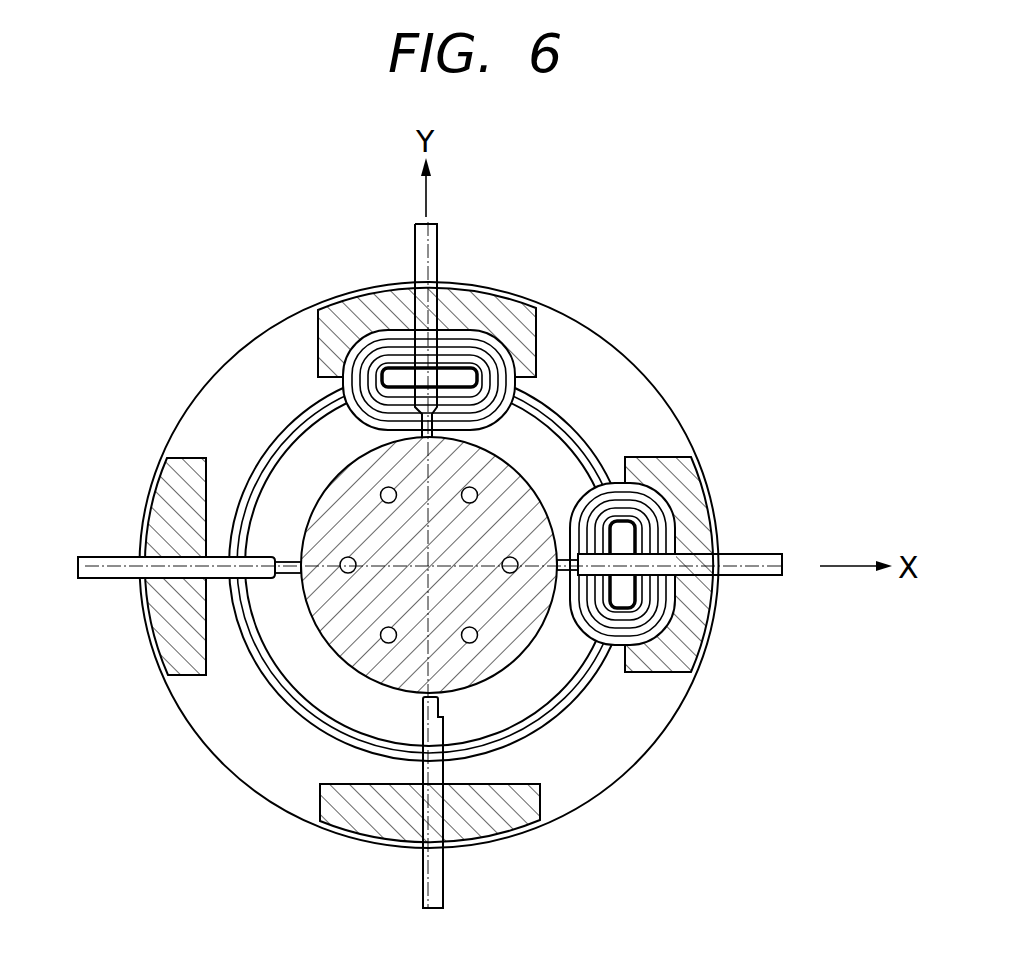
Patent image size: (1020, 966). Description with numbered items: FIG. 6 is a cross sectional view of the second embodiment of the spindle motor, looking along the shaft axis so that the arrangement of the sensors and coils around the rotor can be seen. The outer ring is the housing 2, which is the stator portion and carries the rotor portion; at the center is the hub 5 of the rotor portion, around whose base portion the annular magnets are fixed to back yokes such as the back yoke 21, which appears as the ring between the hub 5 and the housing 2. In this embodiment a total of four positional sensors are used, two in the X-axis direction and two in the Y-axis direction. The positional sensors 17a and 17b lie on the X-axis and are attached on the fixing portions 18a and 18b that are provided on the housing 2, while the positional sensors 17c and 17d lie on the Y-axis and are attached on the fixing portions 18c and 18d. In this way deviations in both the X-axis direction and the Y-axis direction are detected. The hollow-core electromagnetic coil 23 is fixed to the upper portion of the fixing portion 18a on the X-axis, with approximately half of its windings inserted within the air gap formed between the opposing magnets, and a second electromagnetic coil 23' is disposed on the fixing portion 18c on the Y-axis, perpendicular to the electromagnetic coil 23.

The housing 2 is at (608, 403).
The hub 5 is at (357, 520).
The positional sensor 17a is at (758, 577).
The positional sensor 17b is at (97, 565).
The positional sensor 17c is at (420, 237).
The positional sensor 17d is at (433, 888).
The fixing portion 18a is at (693, 532).
The fixing portion 18b is at (177, 502).
The fixing portion 18c is at (490, 308).
The fixing portion 18d is at (368, 813).
The back yoke 21 is at (510, 433).
The electromagnetic coil 23 is at (683, 547).
The electromagnetic coil 23' is at (401, 327).